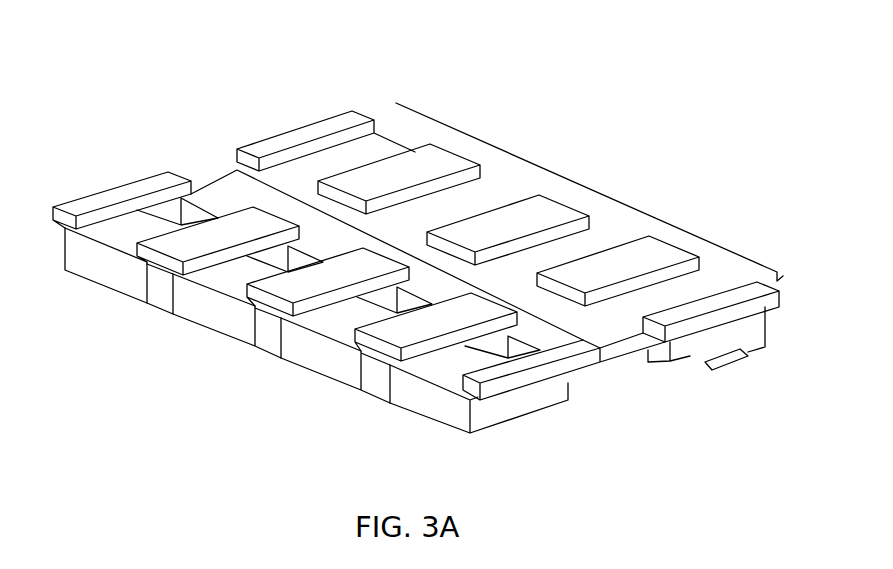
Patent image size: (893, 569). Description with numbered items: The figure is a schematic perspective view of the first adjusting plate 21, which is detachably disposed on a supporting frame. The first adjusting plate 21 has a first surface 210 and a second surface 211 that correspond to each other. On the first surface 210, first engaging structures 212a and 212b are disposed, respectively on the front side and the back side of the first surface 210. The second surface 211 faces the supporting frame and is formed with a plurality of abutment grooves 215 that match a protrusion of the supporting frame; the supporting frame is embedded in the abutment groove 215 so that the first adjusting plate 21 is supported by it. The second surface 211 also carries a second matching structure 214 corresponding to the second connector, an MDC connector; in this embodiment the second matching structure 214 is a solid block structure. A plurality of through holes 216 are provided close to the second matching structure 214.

The first adjusting plate 21 is at (212, 145).
The first surface 210 is at (358, 157).
The second surface 211 is at (693, 367).
The first engaging structure 212a is at (589, 192).
The first engaging structure 212b is at (427, 231).
The second matching structure 214 is at (103, 273).
The abutment groove 215 is at (160, 314).
The through hole 216 is at (165, 213).